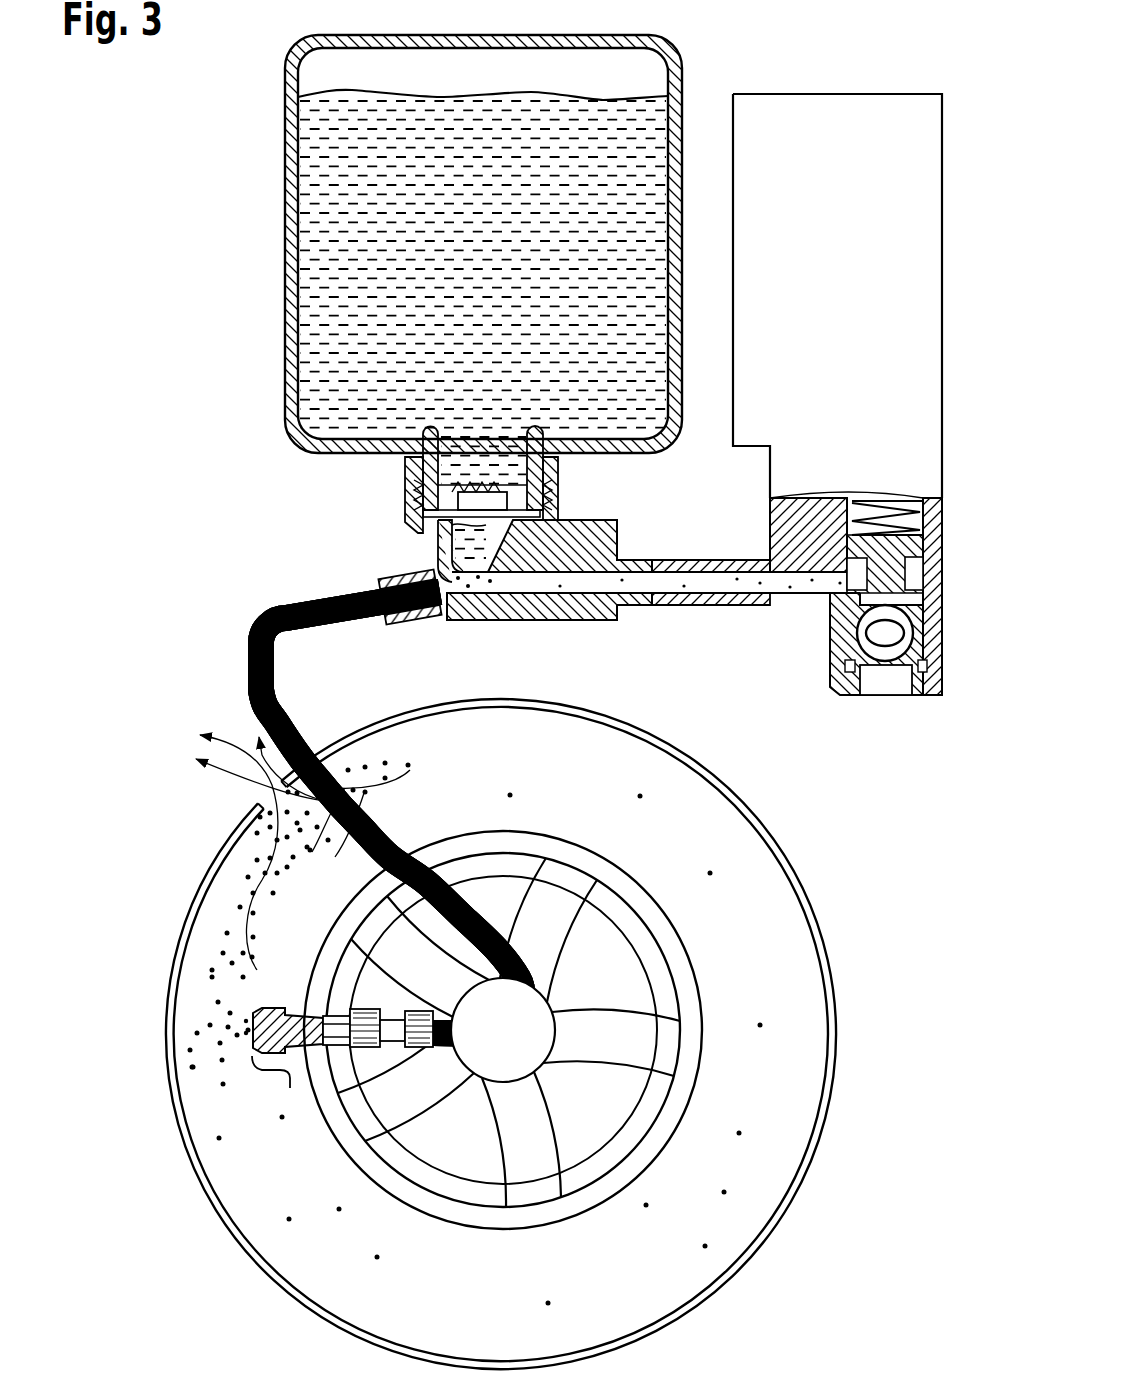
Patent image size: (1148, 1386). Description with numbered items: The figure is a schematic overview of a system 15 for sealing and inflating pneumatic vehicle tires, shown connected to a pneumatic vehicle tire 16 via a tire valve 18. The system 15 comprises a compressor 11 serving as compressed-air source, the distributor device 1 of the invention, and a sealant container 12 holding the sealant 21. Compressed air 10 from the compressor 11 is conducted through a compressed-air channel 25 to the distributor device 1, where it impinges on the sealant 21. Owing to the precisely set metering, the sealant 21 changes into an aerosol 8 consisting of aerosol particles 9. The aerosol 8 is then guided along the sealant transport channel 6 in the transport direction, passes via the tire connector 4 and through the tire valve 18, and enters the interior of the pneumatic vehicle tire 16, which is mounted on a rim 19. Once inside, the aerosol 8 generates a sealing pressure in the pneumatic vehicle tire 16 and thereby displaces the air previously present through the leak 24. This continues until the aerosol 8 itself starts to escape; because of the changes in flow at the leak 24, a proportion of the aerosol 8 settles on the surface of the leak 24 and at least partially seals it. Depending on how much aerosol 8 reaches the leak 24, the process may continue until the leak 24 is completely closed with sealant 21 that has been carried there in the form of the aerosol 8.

The system for sealing and inflating pneumatic vehicle tires 15 is at (194, 131).
The sealant container 12 is at (288, 216).
The sealant 21 is at (345, 310).
The distributor device 1 is at (388, 628).
The compressed air 10 is at (722, 570).
The compressed-air channel 25 is at (720, 606).
The compressor 11 is at (886, 728).
The aerosol particle 9 is at (318, 608).
The aerosol 8 is at (270, 610).
The sealant transport channel 6 is at (245, 660).
The pneumatic vehicle tire 16 is at (251, 1247).
The leak 24 is at (257, 795).
The rim 19 is at (633, 1133).
The tire connector 4 is at (413, 1050).
The tire valve 18 is at (290, 1086).